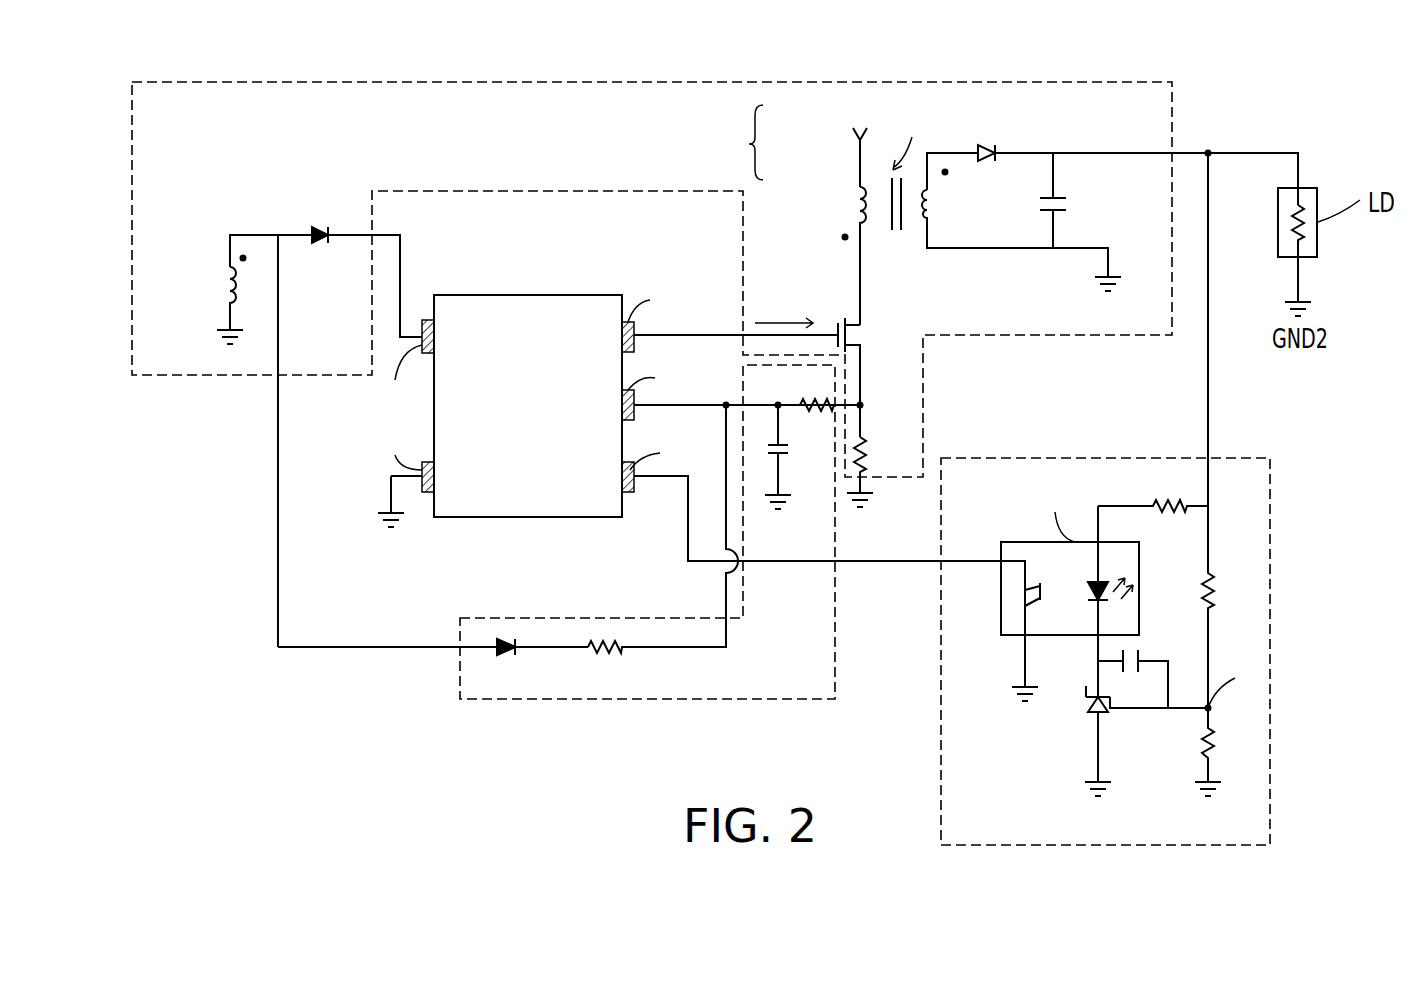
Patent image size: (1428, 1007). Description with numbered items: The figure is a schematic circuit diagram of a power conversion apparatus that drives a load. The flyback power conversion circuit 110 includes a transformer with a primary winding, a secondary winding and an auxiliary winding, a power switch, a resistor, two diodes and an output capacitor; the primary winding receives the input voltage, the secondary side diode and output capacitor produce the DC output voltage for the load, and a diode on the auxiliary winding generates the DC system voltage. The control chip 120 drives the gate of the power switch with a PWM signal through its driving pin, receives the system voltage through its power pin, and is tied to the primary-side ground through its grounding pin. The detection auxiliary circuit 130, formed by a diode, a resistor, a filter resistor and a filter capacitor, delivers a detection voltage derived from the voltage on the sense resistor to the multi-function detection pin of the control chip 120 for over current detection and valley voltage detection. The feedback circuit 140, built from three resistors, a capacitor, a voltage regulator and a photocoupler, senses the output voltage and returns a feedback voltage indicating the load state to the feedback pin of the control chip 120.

The flyback power conversion circuit 110 is at (975, 82).
The control chip 120 is at (528, 295).
The detection auxiliary circuit 130 is at (572, 618).
The feedback circuit 140 is at (1272, 562).